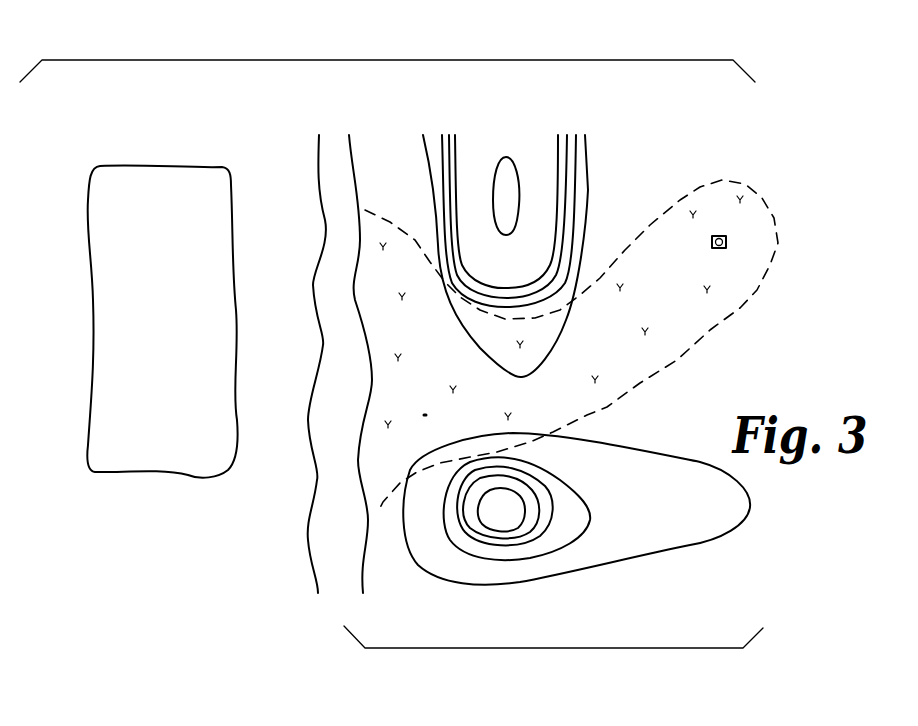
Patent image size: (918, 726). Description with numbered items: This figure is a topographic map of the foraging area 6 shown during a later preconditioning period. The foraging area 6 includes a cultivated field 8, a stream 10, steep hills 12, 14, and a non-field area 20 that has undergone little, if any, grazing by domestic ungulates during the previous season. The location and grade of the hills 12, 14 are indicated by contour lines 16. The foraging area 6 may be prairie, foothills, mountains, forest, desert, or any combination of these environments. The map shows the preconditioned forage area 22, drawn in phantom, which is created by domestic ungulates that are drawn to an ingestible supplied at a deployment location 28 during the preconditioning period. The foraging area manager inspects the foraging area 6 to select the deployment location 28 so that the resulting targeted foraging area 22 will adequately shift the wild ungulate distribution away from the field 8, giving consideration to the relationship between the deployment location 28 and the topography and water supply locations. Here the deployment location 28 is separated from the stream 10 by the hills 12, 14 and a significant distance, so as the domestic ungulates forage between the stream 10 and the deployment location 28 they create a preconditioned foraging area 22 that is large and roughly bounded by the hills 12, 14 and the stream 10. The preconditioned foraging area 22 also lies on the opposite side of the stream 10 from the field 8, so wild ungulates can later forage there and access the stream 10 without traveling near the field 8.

The foraging area 6 is at (379, 60).
The cultivated field 8 is at (162, 321).
The stream 10 is at (340, 364).
The steep hill 12 is at (506, 214).
The steep hill 14 is at (576, 509).
The contour lines 16 is at (577, 183).
The non-field area 20 is at (558, 648).
The preconditioned forage area 22 is at (738, 308).
The deployment location 28 is at (727, 243).